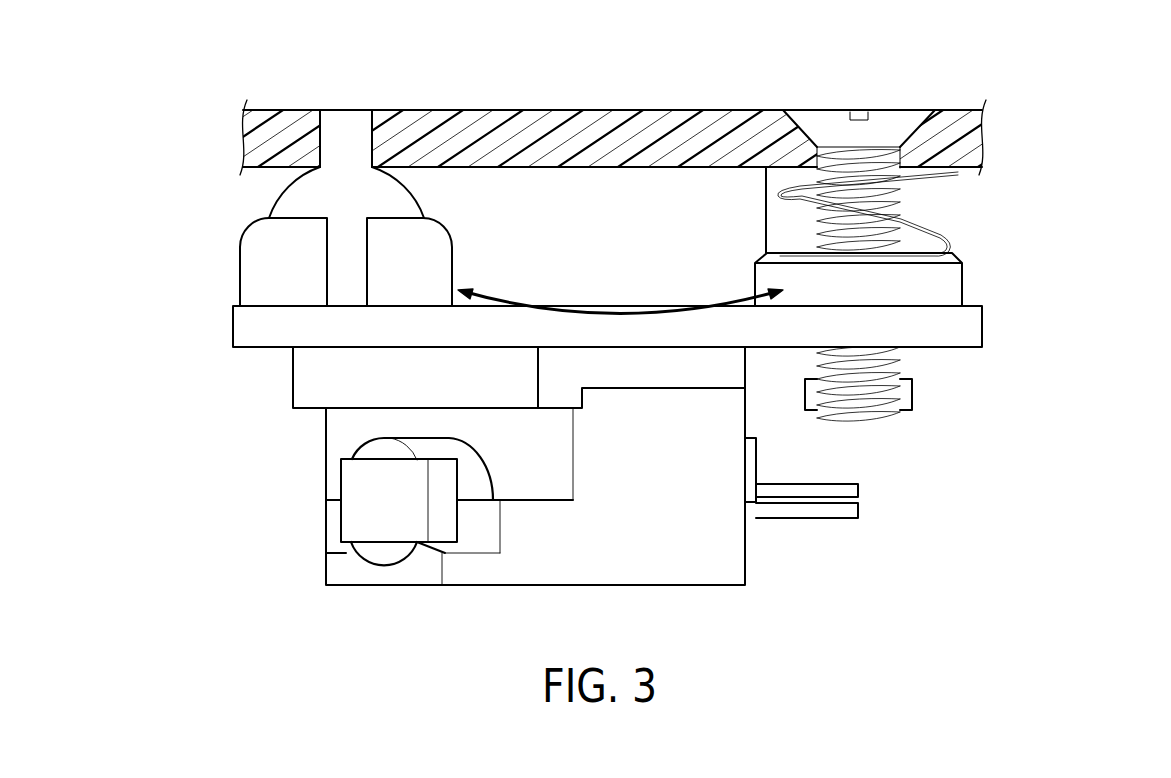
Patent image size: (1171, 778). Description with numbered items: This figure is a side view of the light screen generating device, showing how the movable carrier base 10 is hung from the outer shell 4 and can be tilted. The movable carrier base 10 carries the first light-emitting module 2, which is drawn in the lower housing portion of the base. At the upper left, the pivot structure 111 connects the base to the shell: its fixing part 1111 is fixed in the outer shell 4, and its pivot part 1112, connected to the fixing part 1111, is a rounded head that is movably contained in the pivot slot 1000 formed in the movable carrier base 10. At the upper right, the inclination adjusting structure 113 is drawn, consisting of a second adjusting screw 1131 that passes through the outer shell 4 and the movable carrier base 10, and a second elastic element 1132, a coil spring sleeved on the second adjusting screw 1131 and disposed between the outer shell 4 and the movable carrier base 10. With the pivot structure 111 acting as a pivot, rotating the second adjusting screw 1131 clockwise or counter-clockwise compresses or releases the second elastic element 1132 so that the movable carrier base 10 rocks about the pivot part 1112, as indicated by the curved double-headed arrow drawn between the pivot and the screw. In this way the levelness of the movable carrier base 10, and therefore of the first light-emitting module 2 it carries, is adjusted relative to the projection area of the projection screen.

The outer shell 4 is at (568, 111).
The pivot structure 111 is at (248, 164).
The fixing part 1111 is at (338, 140).
The pivot part 1112 is at (338, 192).
The pivot slot 1000 is at (338, 277).
The movable carrier base 10 is at (255, 327).
The first light-emitting module 2 is at (372, 518).
The inclination adjusting structure 113 is at (959, 266).
The second adjusting screw 1131 is at (886, 127).
The second elastic element 1132 is at (920, 225).